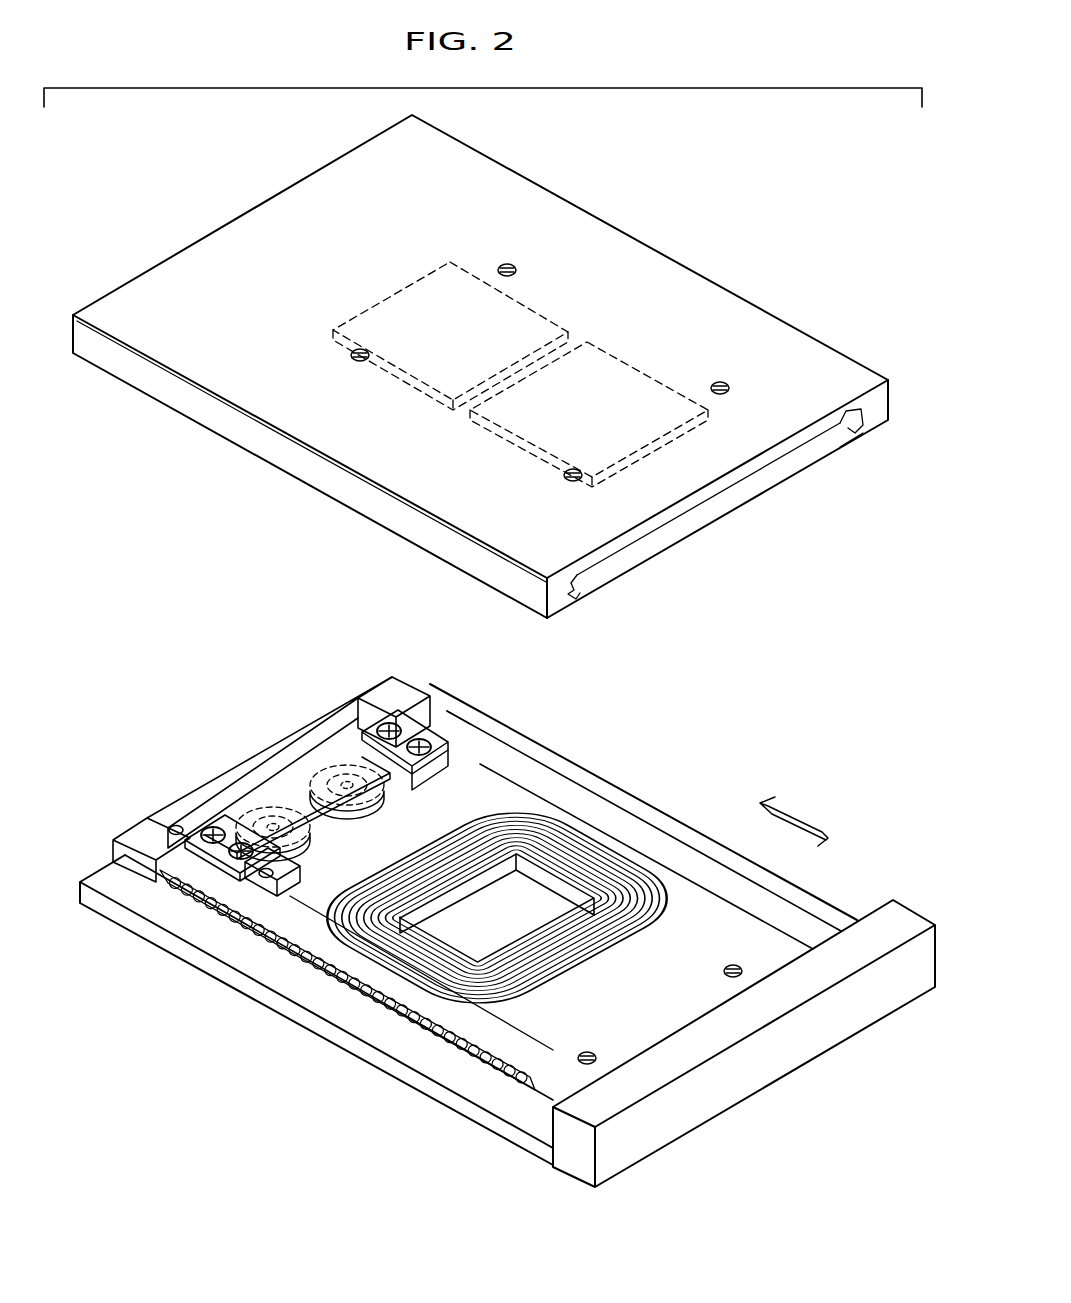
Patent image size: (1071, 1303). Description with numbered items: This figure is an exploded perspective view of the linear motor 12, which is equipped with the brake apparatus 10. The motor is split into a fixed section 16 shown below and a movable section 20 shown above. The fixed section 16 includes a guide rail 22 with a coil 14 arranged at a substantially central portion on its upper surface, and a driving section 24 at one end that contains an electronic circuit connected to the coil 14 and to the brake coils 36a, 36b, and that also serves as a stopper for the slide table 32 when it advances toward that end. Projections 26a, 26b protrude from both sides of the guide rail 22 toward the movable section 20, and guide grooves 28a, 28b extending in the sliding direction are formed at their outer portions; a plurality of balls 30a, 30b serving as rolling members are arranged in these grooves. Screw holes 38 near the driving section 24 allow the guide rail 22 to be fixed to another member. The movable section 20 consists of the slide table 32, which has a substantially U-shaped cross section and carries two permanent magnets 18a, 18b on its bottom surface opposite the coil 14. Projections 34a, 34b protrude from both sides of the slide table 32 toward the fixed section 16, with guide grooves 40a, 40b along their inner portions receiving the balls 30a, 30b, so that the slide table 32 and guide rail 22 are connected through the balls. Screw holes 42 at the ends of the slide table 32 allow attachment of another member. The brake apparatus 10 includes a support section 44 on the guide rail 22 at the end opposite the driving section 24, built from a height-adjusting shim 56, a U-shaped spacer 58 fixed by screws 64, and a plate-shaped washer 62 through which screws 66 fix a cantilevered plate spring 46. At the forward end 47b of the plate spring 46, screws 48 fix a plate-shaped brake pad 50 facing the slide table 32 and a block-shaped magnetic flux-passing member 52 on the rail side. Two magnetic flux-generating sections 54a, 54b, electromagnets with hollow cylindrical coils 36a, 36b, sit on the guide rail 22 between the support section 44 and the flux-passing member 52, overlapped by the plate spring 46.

The brake apparatus 10 is at (290, 683).
The linear motor 12 is at (796, 192).
The coil 14 is at (633, 880).
The fixed section 16 is at (603, 730).
The permanent magnet 18a is at (441, 266).
The permanent magnet 18b is at (611, 348).
The movable section 20 is at (660, 199).
The guide rail 22 is at (462, 1103).
The driving section 24 is at (810, 1052).
The projection 26a is at (126, 834).
The projection 26b is at (388, 694).
The guide groove 28a is at (167, 893).
The guide groove 28b is at (312, 980).
The balls 30a is at (270, 950).
The balls 30b is at (334, 980).
The slide table 32 is at (776, 352).
The projection 34a is at (473, 568).
The projection 34b is at (866, 428).
The coil 36a is at (318, 849).
The coil 36b is at (385, 817).
The screw holes 38 is at (727, 973).
The guide groove 40a is at (580, 592).
The guide groove 40b is at (848, 440).
The screw holes 42 is at (507, 262).
The support section 44 is at (186, 798).
The plate spring 46 is at (292, 792).
The forward end 47b is at (470, 740).
The screws 48 is at (415, 718).
The brake pad 50 is at (405, 724).
The magnetic flux-passing member 52 is at (430, 780).
The magnetic flux-generating section 54a is at (262, 800).
The magnetic flux-generating section 54b is at (334, 766).
The height-adjusting shim 56 is at (292, 893).
The spacer 58 is at (300, 876).
The washer 62 is at (214, 826).
The screws 64 is at (174, 824).
The screws 66 is at (232, 836).